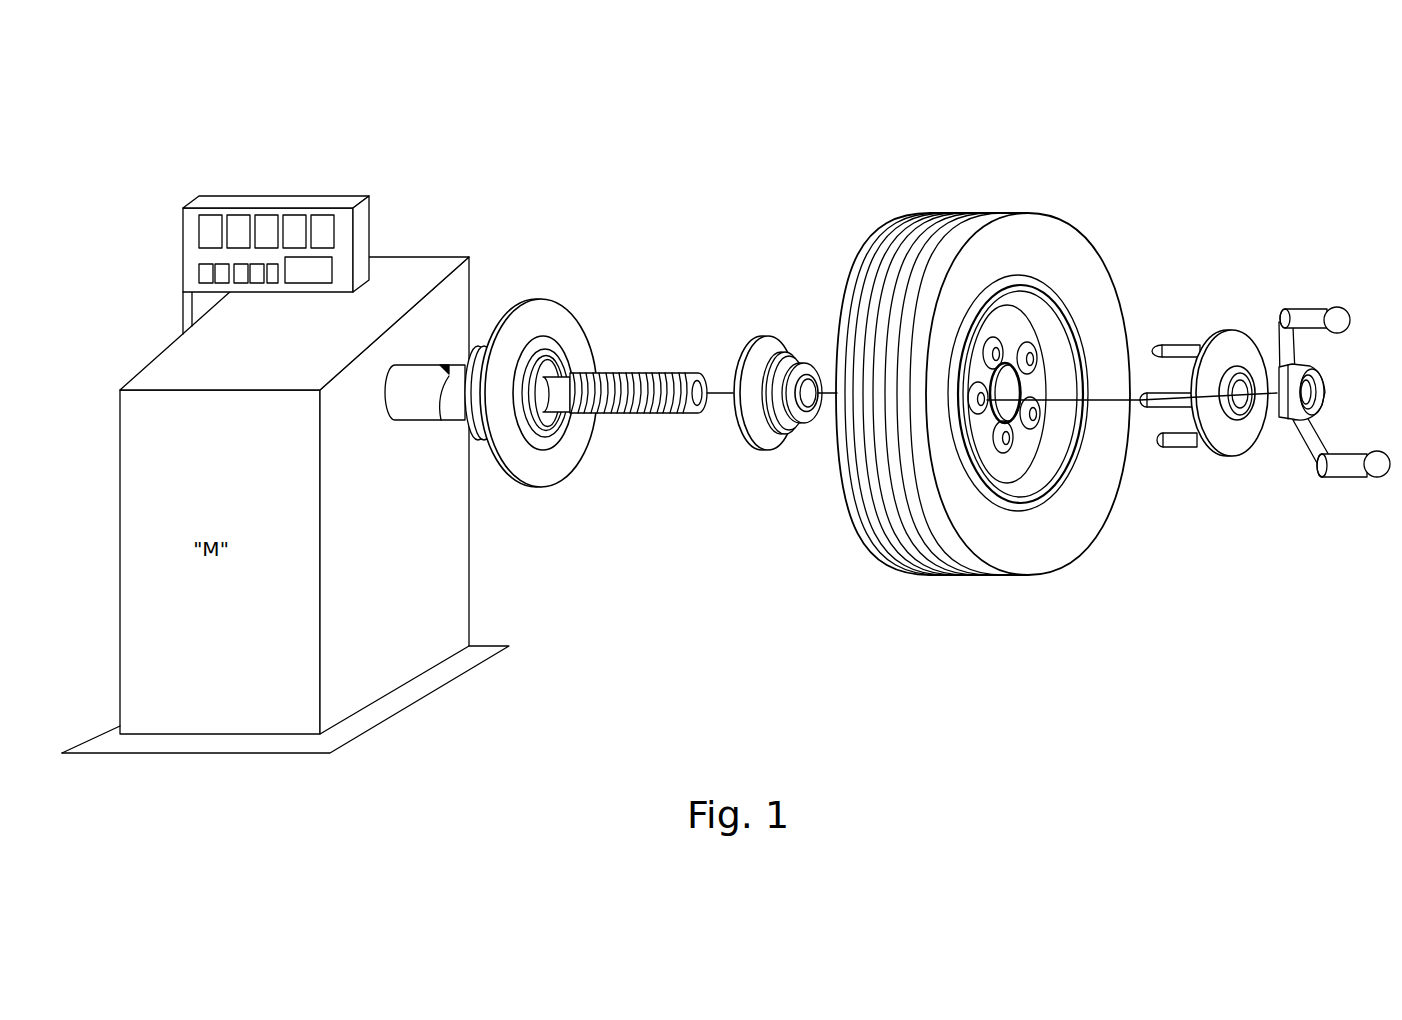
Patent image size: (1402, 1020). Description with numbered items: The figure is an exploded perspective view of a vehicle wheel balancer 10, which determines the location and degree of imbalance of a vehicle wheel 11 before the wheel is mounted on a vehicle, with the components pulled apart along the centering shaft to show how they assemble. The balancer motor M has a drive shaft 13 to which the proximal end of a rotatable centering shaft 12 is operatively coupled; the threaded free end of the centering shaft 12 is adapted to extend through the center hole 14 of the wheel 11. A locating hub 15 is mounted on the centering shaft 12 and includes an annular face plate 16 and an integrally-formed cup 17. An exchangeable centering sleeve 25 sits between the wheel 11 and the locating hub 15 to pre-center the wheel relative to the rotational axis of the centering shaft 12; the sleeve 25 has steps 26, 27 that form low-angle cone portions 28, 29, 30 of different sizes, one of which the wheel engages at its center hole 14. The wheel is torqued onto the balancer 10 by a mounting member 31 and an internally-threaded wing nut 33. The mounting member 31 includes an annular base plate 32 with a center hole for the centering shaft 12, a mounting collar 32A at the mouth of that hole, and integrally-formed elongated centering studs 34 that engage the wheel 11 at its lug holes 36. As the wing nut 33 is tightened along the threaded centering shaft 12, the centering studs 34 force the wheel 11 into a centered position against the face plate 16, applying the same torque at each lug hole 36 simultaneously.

The vehicle wheel balancer 10 is at (502, 187).
The vehicle wheel 11 is at (1025, 215).
The centering shaft 12 is at (645, 377).
The drive shaft 13 is at (406, 404).
The center hole 14 is at (1018, 385).
The locating hub 15 is at (556, 297).
The annular face plate 16 is at (578, 338).
The cup 17 is at (478, 352).
The centering sleeve 25 is at (750, 352).
The step 26 is at (779, 357).
The step 27 is at (797, 363).
The cone portion 28 is at (758, 413).
The cone portion 29 is at (783, 430).
The cone portion 30 is at (793, 433).
The mounting member 31 is at (1236, 318).
The annular base plate 32 is at (1230, 433).
The mounting collar 32A is at (1252, 410).
The wing nut 33 is at (1297, 308).
The centering studs 34 is at (1172, 440).
The lug holes 36 is at (1003, 455).